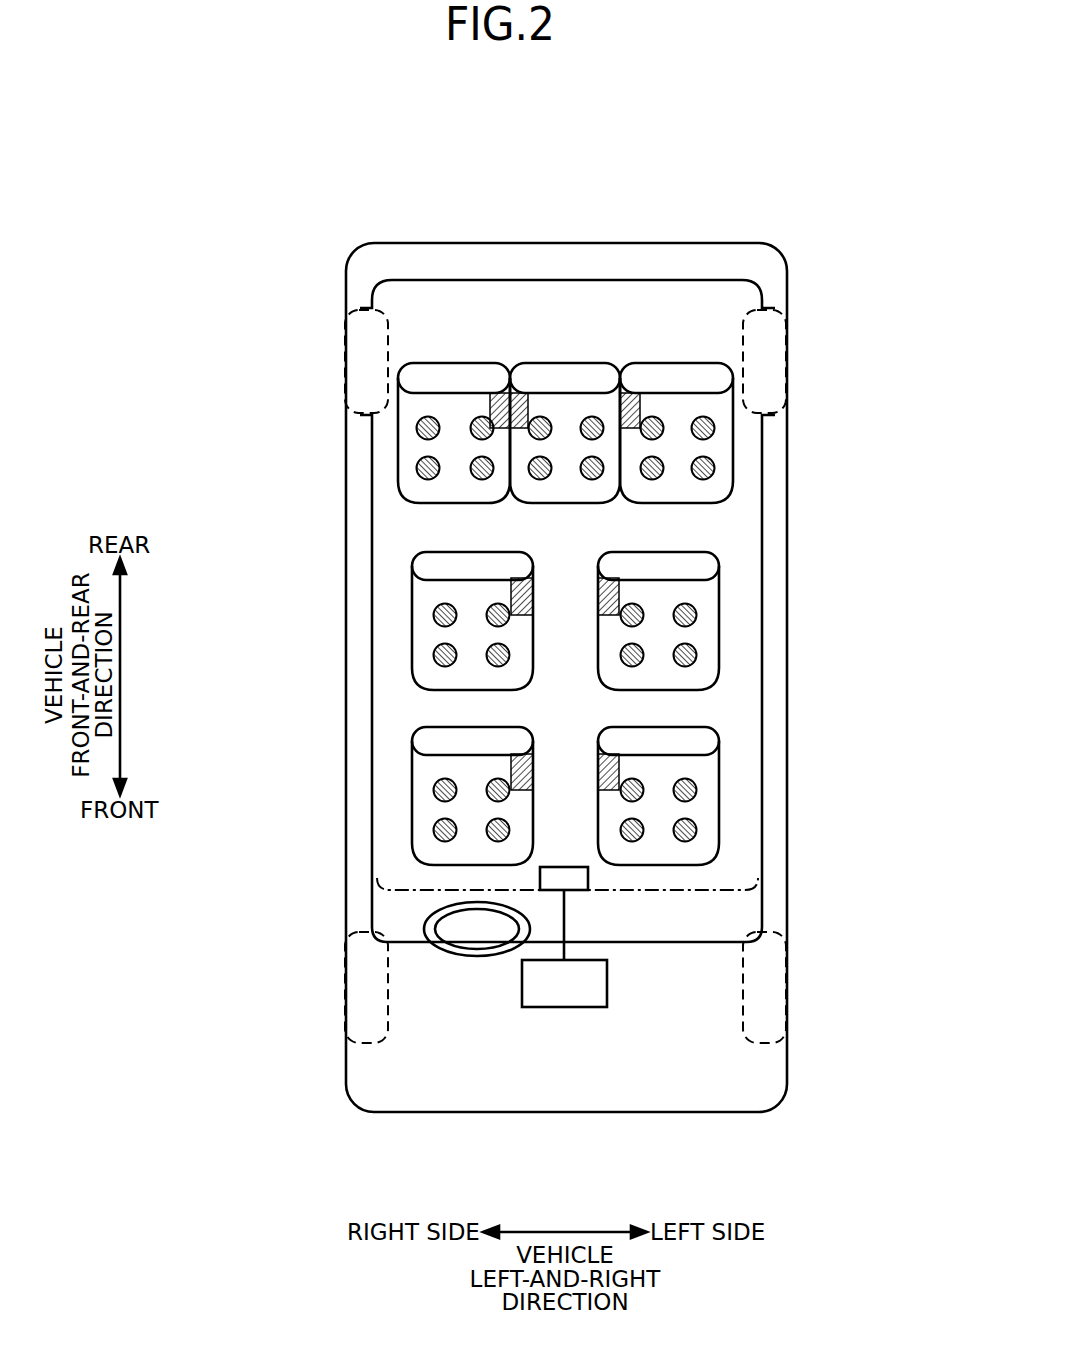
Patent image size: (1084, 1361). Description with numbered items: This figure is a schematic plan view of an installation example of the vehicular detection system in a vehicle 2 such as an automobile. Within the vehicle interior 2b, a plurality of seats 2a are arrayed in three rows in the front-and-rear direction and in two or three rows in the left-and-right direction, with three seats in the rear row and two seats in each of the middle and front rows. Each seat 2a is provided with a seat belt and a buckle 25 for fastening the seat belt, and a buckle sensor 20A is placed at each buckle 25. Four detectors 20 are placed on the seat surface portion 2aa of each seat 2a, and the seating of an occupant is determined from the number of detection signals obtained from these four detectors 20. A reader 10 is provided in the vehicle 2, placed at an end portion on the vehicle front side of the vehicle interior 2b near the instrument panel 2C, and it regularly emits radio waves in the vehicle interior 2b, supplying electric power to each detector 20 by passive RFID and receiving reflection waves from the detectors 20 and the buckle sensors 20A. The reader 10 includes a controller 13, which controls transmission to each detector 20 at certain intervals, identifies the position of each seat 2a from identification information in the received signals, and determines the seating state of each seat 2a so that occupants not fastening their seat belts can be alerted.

The vehicle 2 is at (714, 191).
The seat 2a is at (442, 336).
The seat surface portion 2aa is at (412, 403).
The vehicle interior 2b is at (738, 302).
The instrument panel 2C is at (432, 892).
The reader 10 is at (588, 880).
The controller 13 is at (562, 1007).
The detector 20 is at (542, 418).
The buckle sensor 20A is at (512, 393).
The buckle 25 is at (568, 448).